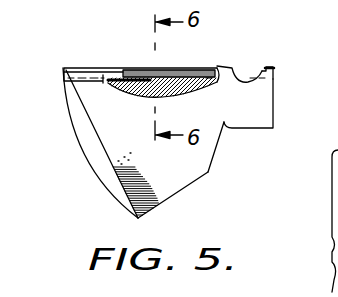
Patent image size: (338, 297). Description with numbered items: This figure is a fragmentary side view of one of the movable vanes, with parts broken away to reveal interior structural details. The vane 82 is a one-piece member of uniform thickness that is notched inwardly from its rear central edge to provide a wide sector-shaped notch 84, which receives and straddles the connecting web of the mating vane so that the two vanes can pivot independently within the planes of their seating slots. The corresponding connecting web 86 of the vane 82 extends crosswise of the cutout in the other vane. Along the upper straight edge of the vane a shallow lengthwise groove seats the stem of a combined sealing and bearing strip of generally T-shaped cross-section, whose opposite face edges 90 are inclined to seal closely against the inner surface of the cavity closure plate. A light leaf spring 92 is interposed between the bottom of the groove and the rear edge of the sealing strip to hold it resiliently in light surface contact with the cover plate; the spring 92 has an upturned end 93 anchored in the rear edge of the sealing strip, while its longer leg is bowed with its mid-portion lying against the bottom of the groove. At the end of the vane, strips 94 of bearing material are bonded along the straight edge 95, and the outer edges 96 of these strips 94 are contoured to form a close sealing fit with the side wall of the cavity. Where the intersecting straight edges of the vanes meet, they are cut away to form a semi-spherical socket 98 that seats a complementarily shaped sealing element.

The vane 82 is at (172, 191).
The sector-shaped notch 84 is at (214, 157).
The connecting web 86 is at (267, 105).
The face edges 90 is at (188, 68).
The leaf spring 92 is at (124, 80).
The upturned end 93 is at (218, 67).
The strips of bearing material 94 is at (108, 174).
The straight edge 95 is at (87, 125).
The outer edges 96 is at (75, 138).
The semi-spherical socket 98 is at (273, 72).